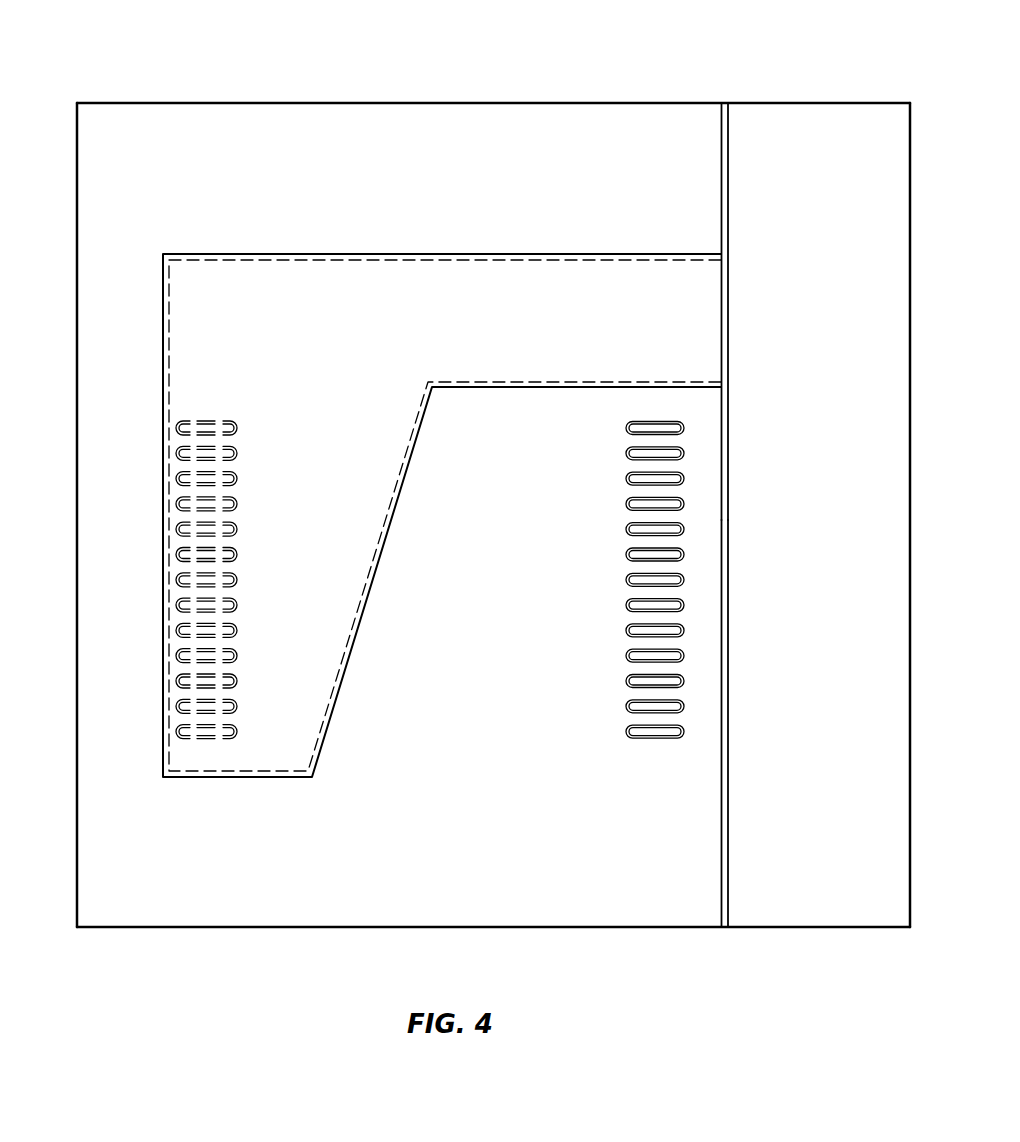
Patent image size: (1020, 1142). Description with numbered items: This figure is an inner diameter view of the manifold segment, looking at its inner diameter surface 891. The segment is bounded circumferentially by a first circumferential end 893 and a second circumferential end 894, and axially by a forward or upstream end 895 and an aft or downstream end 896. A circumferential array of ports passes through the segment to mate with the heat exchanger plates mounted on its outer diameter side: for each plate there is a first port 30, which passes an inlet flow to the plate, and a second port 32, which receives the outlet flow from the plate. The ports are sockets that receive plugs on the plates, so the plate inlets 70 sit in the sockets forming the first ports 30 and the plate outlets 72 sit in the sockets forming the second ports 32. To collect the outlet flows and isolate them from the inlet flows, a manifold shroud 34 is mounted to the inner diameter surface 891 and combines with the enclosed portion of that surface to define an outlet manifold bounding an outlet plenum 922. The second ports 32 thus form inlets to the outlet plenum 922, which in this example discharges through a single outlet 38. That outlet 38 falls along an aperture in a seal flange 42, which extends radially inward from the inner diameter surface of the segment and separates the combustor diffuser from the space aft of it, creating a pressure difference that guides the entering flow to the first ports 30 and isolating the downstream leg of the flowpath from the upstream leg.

The first circumferential end 893 is at (270, 103).
The second circumferential end 894 is at (173, 927).
The forward/upstream end 895 is at (77, 452).
The aft/downstream end 896 is at (910, 440).
The inner diameter surface 891 is at (331, 162).
The single outlet 38 is at (740, 303).
The seal flange 42 is at (743, 561).
The manifold shroud 34 is at (190, 392).
The outlet plenum 922 is at (194, 287).
The second port 32 is at (233, 750).
The plate outlet 72 is at (188, 750).
The first port 30 is at (643, 748).
The plate inlet 70 is at (674, 749).